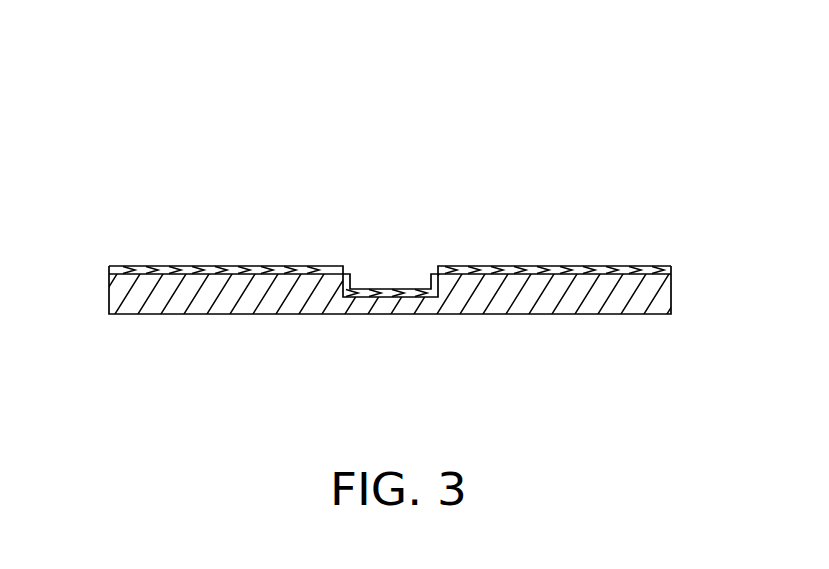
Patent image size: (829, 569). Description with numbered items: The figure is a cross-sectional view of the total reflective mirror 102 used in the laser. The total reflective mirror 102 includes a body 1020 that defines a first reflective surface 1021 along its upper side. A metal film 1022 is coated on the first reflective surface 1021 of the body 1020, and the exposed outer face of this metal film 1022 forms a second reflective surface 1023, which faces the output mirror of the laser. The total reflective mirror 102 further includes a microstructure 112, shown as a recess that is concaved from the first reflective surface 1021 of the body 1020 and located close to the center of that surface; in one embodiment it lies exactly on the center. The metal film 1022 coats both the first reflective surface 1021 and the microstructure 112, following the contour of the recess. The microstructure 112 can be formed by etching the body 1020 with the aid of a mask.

The total reflective mirror 102 is at (466, 76).
The body 1020 is at (658, 300).
The first reflective surface 1021 is at (131, 277).
The metal film 1022 is at (624, 270).
The second reflective surface 1023 is at (153, 257).
The microstructure 112 is at (402, 272).